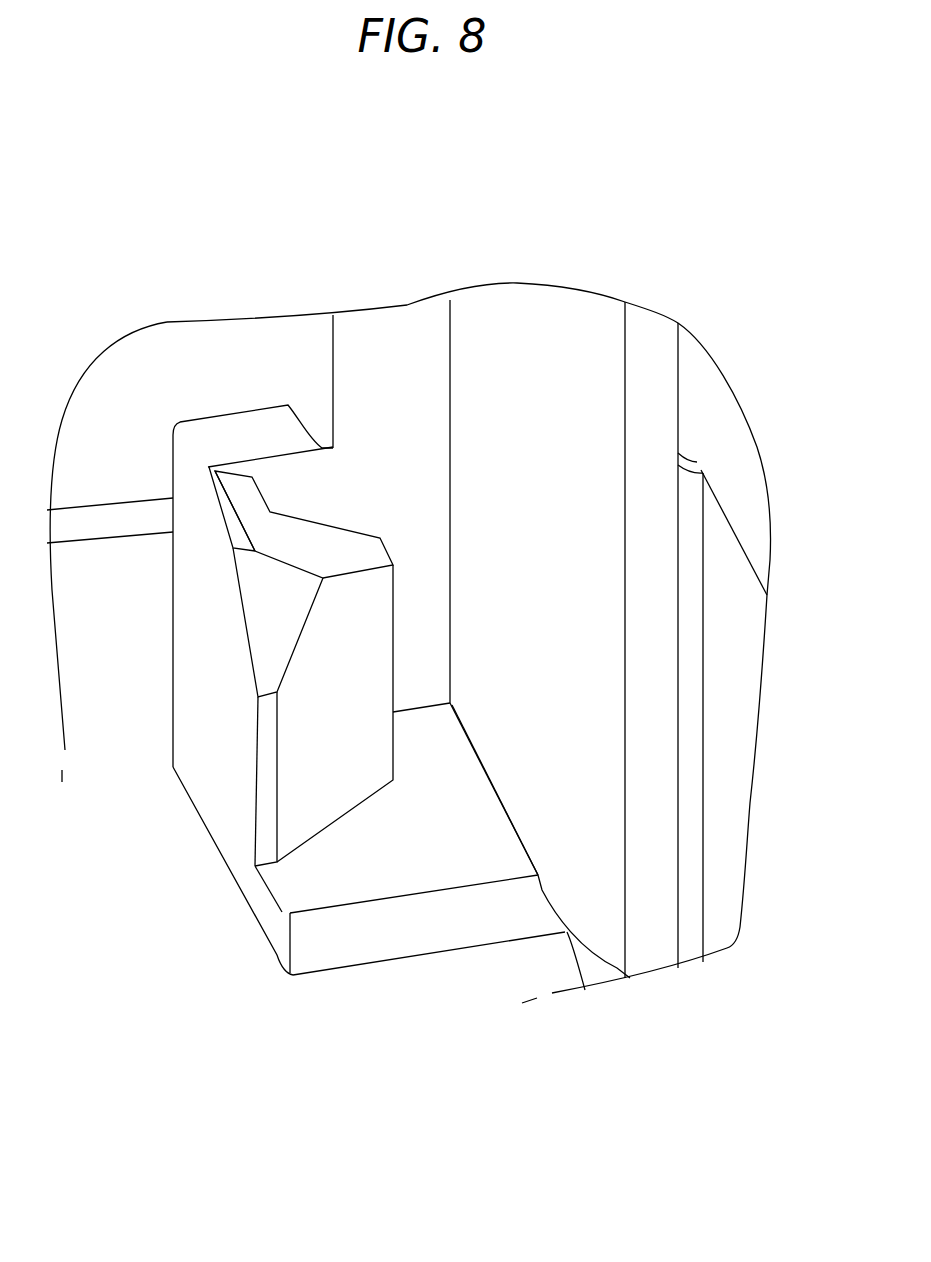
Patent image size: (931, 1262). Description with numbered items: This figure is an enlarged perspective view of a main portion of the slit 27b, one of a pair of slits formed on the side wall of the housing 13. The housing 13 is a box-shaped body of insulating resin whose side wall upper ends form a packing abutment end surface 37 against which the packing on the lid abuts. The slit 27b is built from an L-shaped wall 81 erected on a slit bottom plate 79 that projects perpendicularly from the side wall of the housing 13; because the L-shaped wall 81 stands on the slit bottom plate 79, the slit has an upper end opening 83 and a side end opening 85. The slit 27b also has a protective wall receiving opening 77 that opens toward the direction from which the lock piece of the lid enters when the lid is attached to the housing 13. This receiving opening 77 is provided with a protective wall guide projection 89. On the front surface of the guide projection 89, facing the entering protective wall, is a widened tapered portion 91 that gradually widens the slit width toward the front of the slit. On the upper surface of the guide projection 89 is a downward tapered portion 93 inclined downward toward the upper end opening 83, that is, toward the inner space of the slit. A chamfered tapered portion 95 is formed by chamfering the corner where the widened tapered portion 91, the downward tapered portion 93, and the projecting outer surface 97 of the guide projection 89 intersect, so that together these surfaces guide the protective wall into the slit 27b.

The housing 13 is at (716, 772).
The packing abutment end surface 37 is at (653, 903).
The slit 27b is at (434, 752).
The protective wall receiving opening 77 is at (403, 905).
The slit bottom plate 79 is at (313, 943).
The L-shaped wall 81 is at (197, 407).
The upper end opening 83 is at (407, 508).
The side end opening 85 is at (395, 642).
The protective wall guide projection 89 is at (402, 594).
The widened tapered portion 91 is at (318, 778).
The downward tapered portion 93 is at (315, 542).
The chamfered tapered portion 95 is at (270, 602).
The projecting outer surface 97 is at (213, 697).